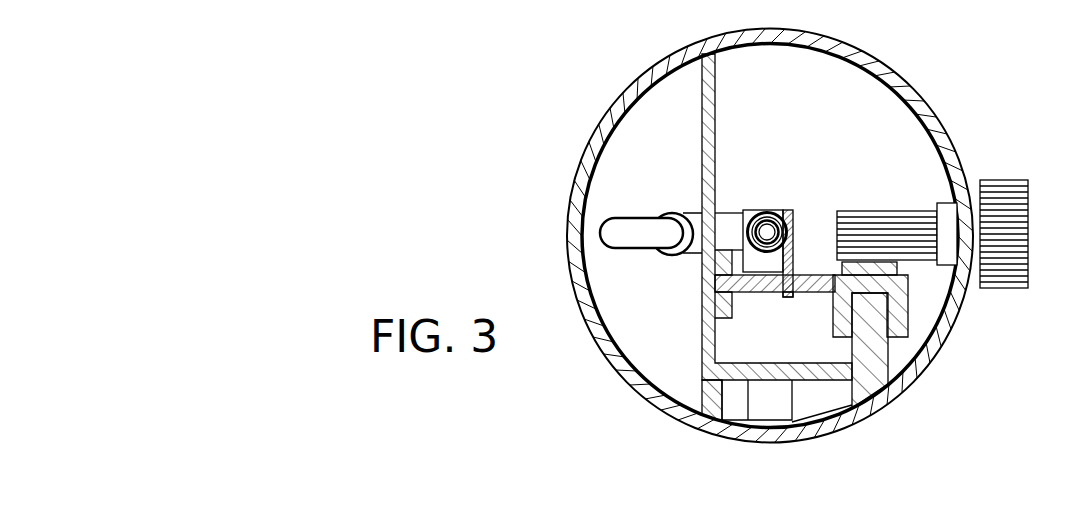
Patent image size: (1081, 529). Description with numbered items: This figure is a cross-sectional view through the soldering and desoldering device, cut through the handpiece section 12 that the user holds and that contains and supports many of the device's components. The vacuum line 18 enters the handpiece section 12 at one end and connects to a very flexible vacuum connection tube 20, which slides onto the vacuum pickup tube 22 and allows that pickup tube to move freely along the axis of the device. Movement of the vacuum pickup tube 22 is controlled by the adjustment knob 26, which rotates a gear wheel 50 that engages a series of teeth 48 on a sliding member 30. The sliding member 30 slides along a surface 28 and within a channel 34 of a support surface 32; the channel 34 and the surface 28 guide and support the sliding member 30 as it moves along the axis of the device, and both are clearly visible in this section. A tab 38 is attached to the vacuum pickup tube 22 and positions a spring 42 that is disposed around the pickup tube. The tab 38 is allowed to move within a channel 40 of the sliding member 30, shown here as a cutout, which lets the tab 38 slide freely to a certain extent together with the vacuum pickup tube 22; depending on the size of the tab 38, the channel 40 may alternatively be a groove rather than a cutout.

The handpiece section 12 is at (891, 403).
The vacuum line 18 is at (606, 232).
The vacuum connection tube 20 is at (688, 210).
The vacuum pickup tube 22 is at (777, 215).
The adjustment knob 26 is at (1003, 180).
The surface 28 is at (868, 292).
The sliding member 30 is at (819, 294).
The support surface 32 is at (701, 118).
The channel 34 is at (717, 289).
The tab 38 is at (796, 240).
The channel 40 is at (781, 295).
The spring 42 is at (757, 212).
The teeth 48 is at (877, 262).
The gear wheel 50 is at (887, 222).